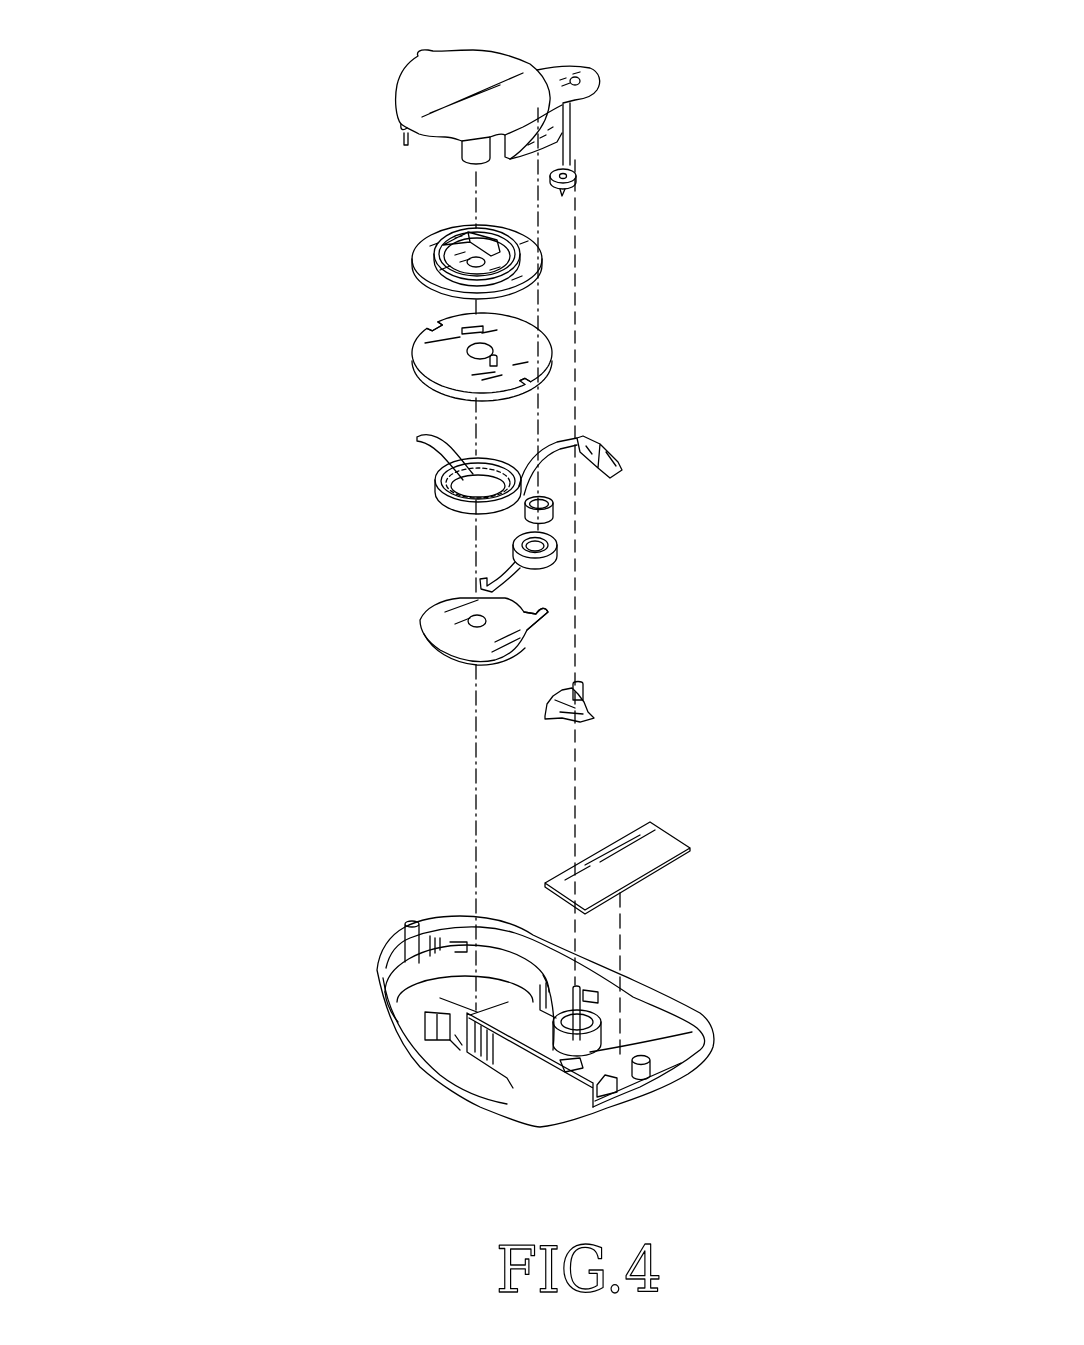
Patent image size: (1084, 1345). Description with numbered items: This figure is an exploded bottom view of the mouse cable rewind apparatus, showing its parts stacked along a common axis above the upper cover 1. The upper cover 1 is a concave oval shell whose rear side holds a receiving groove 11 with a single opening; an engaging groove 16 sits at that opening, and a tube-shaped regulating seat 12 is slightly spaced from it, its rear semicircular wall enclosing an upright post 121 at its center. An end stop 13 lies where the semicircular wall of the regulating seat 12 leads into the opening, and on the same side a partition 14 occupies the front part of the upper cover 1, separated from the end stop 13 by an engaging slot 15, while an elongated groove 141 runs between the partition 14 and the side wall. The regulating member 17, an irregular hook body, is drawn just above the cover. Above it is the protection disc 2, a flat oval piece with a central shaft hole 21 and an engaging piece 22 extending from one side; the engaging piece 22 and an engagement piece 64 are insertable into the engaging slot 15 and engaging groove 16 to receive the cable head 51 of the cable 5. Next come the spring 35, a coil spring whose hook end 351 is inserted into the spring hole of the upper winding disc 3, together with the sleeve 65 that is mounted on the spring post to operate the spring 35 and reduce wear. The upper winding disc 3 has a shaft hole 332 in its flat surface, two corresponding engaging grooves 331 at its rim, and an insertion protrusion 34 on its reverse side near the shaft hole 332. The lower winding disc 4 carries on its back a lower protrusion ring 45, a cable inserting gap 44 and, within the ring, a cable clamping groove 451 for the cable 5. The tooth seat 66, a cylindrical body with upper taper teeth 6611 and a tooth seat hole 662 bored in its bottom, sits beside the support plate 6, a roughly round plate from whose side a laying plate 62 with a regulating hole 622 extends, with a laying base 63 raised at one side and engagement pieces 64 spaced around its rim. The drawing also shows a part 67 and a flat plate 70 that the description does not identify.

The upper cover 1 is at (700, 1078).
The receiving groove 11 is at (460, 972).
The regulating seat 12 is at (603, 1027).
The upright post 121 is at (582, 995).
The end stop 13 is at (440, 1023).
The partition 14 is at (607, 1122).
The elongated groove 141 is at (495, 1052).
The engaging slot 15 is at (452, 1050).
The engaging groove 16 is at (545, 998).
The regulating member 17 is at (592, 706).
The protection disc 2 is at (418, 627).
The shaft hole 21 is at (490, 620).
The engaging piece 22 is at (545, 613).
The upper winding disc 3 is at (555, 362).
The engaging grooves 331 is at (538, 383).
The shaft hole 332 is at (466, 353).
The insertion protrusion 34 is at (490, 364).
The spring 35 is at (505, 553).
The hook end 351 is at (490, 591).
The lower winding disc 4 is at (545, 268).
The cable inserting gap 44 is at (438, 238).
The lower protrusion ring 45 is at (436, 262).
The cable clamping groove 451 is at (474, 232).
The cable 5 is at (436, 487).
The cable head 51 is at (603, 473).
The support plate 6 is at (393, 103).
The laying plate 62 is at (553, 68).
The regulating hole 622 is at (580, 82).
The laying base 63 is at (556, 156).
The engagement pieces 64 is at (462, 147).
The sleeve 65 is at (526, 513).
The tooth seat 66 is at (578, 178).
The tooth seat hole 662 is at (580, 170).
The upper taper teeth 6611 is at (564, 194).
The peg 67 is at (393, 122).
The circuit board 70 is at (652, 843).